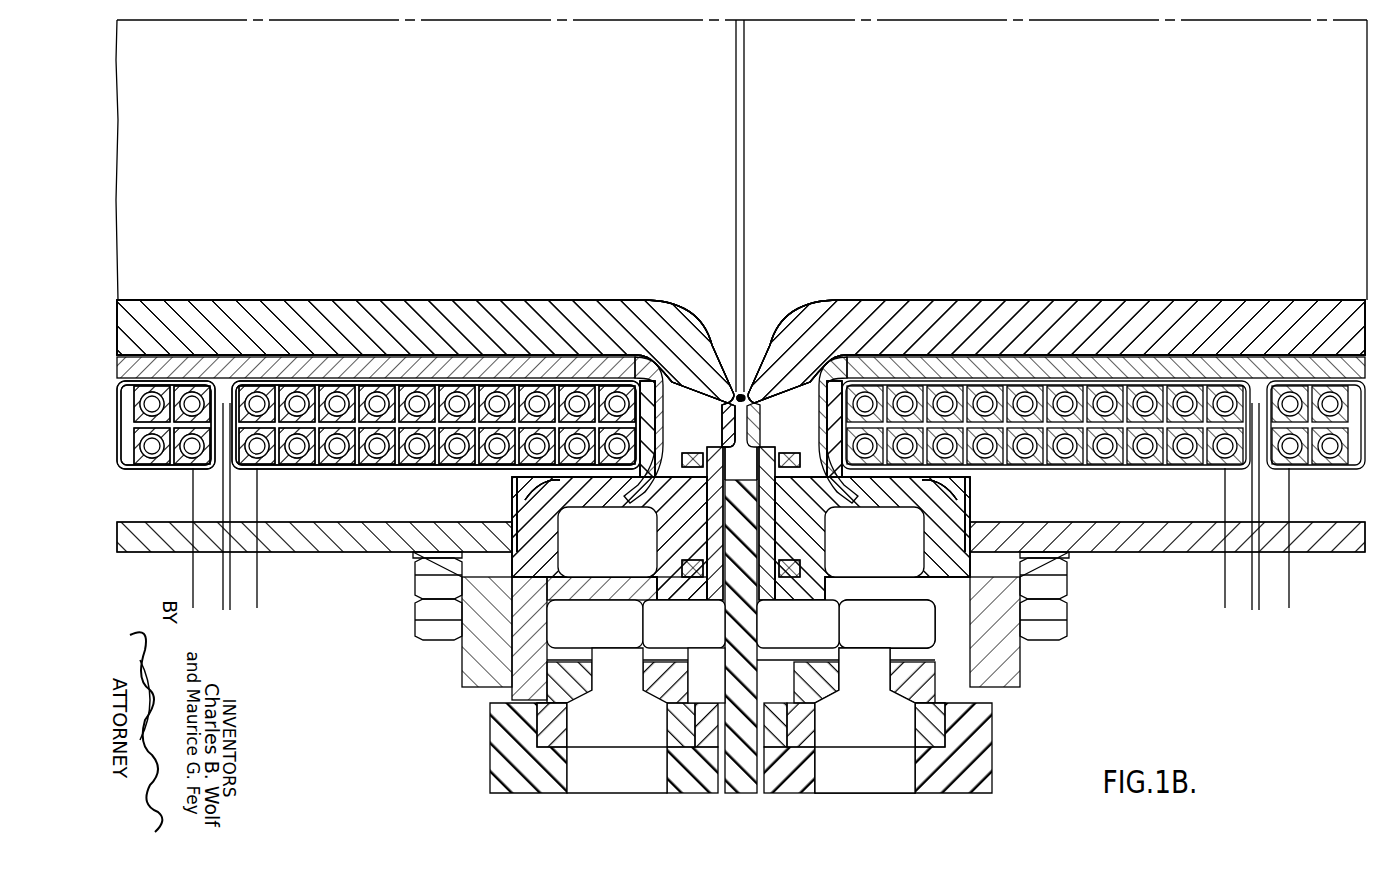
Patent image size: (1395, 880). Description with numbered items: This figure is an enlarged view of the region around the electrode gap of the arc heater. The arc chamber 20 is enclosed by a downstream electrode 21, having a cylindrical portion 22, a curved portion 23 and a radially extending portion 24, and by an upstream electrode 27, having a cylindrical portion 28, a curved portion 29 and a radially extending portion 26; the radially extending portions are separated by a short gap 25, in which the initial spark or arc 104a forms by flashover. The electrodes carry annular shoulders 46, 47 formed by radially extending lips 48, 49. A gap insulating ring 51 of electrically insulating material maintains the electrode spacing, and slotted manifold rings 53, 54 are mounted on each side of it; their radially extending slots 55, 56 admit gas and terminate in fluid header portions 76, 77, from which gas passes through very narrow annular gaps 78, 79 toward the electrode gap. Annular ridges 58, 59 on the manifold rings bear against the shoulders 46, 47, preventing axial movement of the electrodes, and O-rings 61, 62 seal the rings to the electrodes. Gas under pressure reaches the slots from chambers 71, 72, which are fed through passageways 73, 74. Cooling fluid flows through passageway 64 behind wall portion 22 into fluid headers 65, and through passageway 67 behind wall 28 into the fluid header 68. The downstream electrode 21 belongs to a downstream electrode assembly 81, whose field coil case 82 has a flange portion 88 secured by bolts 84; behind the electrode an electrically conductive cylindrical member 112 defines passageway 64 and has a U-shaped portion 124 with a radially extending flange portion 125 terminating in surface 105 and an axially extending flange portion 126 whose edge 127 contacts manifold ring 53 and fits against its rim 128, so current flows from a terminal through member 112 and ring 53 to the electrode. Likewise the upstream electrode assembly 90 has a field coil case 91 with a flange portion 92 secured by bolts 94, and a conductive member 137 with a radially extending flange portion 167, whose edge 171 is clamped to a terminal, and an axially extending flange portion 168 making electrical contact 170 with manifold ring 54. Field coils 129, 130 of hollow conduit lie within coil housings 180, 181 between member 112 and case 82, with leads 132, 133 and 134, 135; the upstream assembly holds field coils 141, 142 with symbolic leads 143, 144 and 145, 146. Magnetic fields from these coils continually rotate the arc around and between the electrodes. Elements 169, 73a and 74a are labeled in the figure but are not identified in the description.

The arc chamber 20 is at (433, 154).
The downstream electrode 21 is at (370, 300).
The cylindrical portion 22 is at (440, 300).
The passageway 64 is at (504, 300).
The curved portion 23 is at (672, 320).
The radially extending portion 24 is at (724, 376).
The gap 25 is at (748, 378).
The curved portion 29 is at (786, 318).
The passageway 67 is at (992, 355).
The upstream electrode 27 is at (1116, 305).
The cylindrical portion 28 is at (1214, 300).
The coil housing 180 is at (160, 385).
The coil housing 181 is at (250, 385).
The cylindrical member 112 is at (322, 366).
The member of electrically conductive material 137 is at (1160, 367).
The arc 104a is at (735, 404).
The annular shoulder 46 is at (700, 446).
The annular ridge 58 is at (733, 442).
The annular ridge 59 is at (749, 440).
The annular shoulder 47 is at (783, 455).
The radially extending portion 26 is at (741, 463).
The field coil 129 is at (162, 470).
The field coil 130 is at (374, 470).
The U-shaped portion 124 is at (530, 483).
The radially extending flange portion 125 is at (514, 522).
The field coil case 82 is at (170, 532).
The O-ring 61 is at (688, 468).
The annular gap 78 is at (715, 470).
The annular gap 79 is at (766, 468).
The O-ring 62 is at (818, 470).
The radially extending lip 48 is at (607, 542).
The fluid header portion 76 is at (712, 521).
The fluid header portion 77 is at (770, 520).
The radially extending lip 49 is at (855, 495).
The housing 169 is at (900, 490).
The field coil 141 is at (1088, 470).
The field coil 142 is at (1325, 470).
The slotted manifold ring 53 is at (670, 549).
The slots 55 is at (700, 562).
The slots 56 is at (782, 562).
The slotted manifold ring 54 is at (814, 549).
The axially extending flange portion 168 is at (882, 577).
The axially extending annular flange portion 126 is at (605, 577).
The lead 132 is at (193, 576).
The lead 133 is at (223, 592).
The downstream electrode assembly 81 is at (380, 552).
The upstream electrode assembly 90 is at (1095, 552).
The field coil case 91 is at (1196, 552).
The lead 135 is at (258, 596).
The lead 134 is at (231, 610).
The fluid header 65 is at (580, 590).
The chamber 71 is at (640, 632).
The edge 127 is at (690, 606).
The rim 128 is at (706, 665).
The electrical contact 170 is at (778, 603).
The chamber 72 is at (840, 627).
The fluid header 68 is at (915, 600).
The radially extending flange portion 167 is at (935, 626).
The bolts 94 is at (1066, 601).
The lead 143 is at (1225, 601).
The lead 144 is at (1252, 630).
The lead 145 is at (1260, 630).
The lead 146 is at (1290, 616).
The support column 73a is at (525, 642).
The bolts 84 is at (425, 630).
The flange portion 88 is at (470, 671).
The surface 105 is at (500, 712).
The post neck 74a is at (876, 662).
The flange portion 92 is at (1013, 687).
The edge 171 is at (965, 726).
The passageway 73 is at (600, 793).
The gap insulating ring 51 is at (746, 793).
The passageway 74 is at (906, 793).